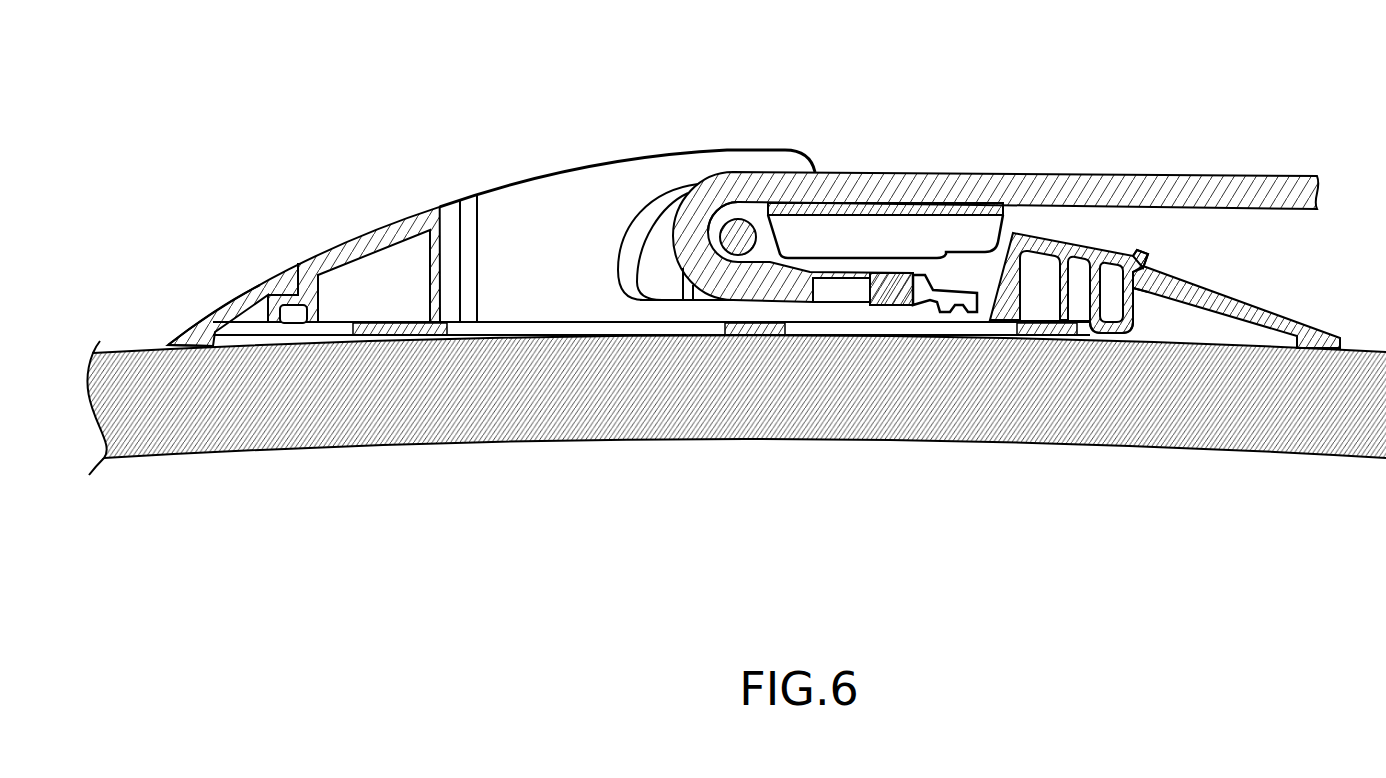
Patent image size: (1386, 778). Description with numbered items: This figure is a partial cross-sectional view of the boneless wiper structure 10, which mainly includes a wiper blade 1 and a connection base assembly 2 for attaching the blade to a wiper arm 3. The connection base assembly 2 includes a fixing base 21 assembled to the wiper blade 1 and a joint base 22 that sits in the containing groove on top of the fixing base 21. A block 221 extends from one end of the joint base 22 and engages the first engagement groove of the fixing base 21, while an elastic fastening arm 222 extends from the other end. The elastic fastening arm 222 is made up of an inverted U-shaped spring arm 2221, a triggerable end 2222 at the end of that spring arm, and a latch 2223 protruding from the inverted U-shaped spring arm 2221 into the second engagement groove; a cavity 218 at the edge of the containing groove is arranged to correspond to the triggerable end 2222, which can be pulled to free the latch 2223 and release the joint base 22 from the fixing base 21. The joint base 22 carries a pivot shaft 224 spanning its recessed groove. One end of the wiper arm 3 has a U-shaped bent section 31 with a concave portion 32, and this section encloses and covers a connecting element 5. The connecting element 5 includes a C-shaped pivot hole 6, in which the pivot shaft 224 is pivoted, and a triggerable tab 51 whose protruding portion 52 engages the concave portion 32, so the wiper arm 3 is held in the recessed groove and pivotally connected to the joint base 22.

The boneless wiper structure 10 is at (728, 40).
The wiper blade 1 is at (586, 422).
The connection base assembly 2 is at (312, 108).
The fixing base 21 is at (232, 290).
The joint base 22 is at (357, 230).
The block 221 is at (288, 300).
The elastic fastening arm 222 is at (1118, 342).
The inverted U-shaped spring arm 2221 is at (1135, 335).
The triggerable end 2222 is at (1142, 252).
The latch 2223 is at (1185, 290).
The cavity 218 is at (1148, 280).
The pivot shaft 224 is at (680, 228).
The wiper arm 3 is at (1067, 187).
The U-shaped bent section 31 is at (710, 283).
The concave portion 32 is at (823, 295).
The connecting element 5 is at (880, 205).
The triggerable tab 51 is at (952, 310).
The protruding portion 52 is at (857, 280).
The C-shaped pivot hole 6 is at (736, 240).